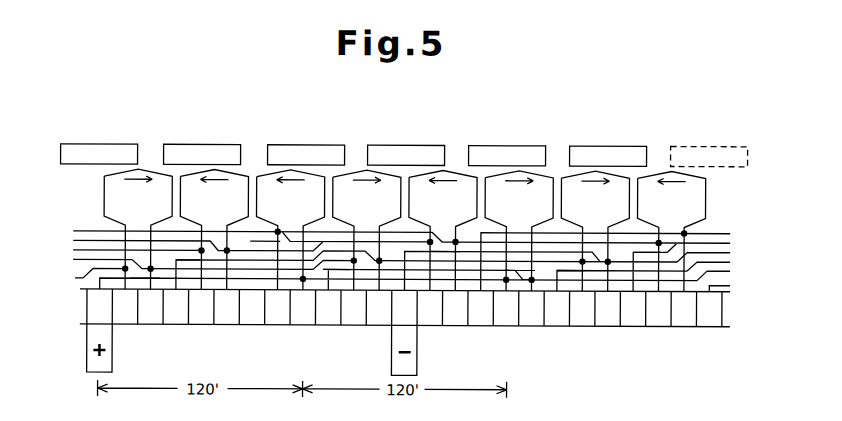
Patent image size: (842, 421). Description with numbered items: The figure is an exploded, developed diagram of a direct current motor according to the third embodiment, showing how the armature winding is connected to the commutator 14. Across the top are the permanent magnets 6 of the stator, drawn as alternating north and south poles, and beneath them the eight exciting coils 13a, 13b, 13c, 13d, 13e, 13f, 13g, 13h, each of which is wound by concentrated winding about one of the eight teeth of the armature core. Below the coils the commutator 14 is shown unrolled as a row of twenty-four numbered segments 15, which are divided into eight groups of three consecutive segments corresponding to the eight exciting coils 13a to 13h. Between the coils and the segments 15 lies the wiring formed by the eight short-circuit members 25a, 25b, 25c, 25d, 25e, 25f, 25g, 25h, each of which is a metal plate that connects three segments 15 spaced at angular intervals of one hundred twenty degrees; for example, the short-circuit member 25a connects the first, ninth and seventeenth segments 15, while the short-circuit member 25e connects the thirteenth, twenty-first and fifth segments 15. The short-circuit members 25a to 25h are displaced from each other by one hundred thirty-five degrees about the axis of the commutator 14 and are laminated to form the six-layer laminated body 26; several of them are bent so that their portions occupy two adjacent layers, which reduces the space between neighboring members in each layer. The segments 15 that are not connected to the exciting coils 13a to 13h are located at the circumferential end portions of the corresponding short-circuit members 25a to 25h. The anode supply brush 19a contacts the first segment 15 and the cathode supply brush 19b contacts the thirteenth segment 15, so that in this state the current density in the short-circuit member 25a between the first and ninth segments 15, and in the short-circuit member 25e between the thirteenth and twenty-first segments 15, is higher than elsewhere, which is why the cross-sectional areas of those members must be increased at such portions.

The permanent magnet 6 is at (125, 144).
The first exciting coil 13a is at (153, 213).
The second exciting coil 13b is at (199, 213).
The third exciting coil 13c is at (275, 213).
The fourth exciting coil 13d is at (351, 213).
The fifth exciting coil 13e is at (458, 213).
The sixth exciting coil 13f is at (534, 213).
The seventh exciting coil 13g is at (580, 213).
The eighth exciting coil 13h is at (656, 213).
The commutator 14 is at (727, 309).
The segment 15 is at (84, 305).
The anode supply brush 19a is at (91, 362).
The cathode supply brush 19b is at (418, 368).
The short-circuit member 25a is at (146, 278).
The short-circuit member 25b is at (337, 268).
The short-circuit member 25c is at (570, 268).
The short-circuit member 25d is at (187, 260).
The short-circuit member 25e is at (444, 250).
The short-circuit member 25f is at (645, 250).
The short-circuit member 25g is at (265, 240).
The short-circuit member 25h is at (519, 268).
The laminated body 26 is at (71, 227).